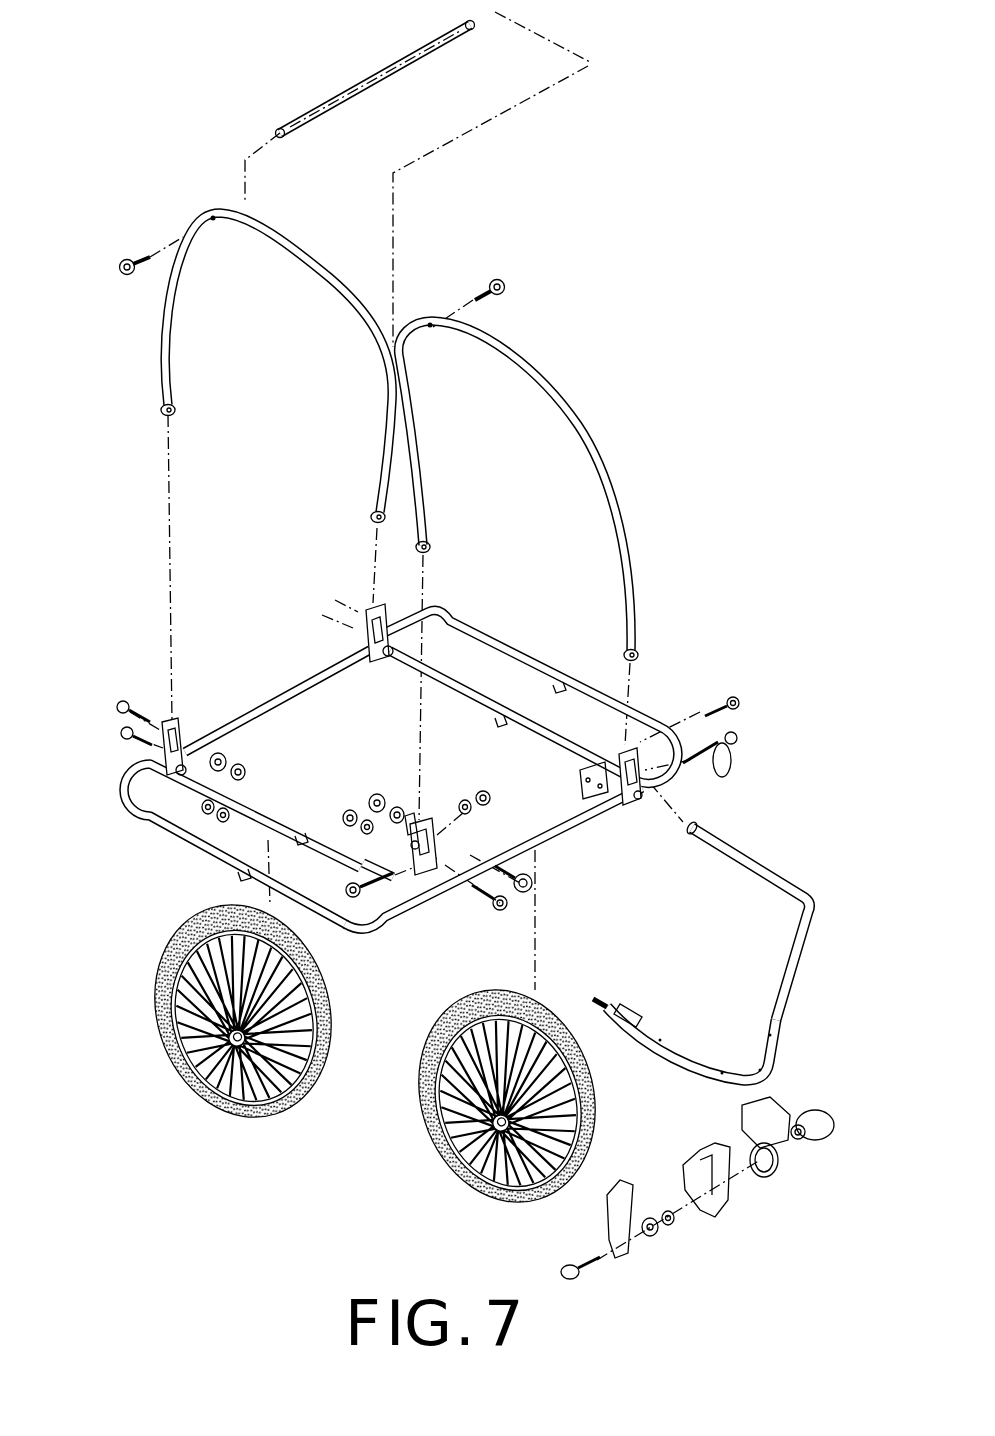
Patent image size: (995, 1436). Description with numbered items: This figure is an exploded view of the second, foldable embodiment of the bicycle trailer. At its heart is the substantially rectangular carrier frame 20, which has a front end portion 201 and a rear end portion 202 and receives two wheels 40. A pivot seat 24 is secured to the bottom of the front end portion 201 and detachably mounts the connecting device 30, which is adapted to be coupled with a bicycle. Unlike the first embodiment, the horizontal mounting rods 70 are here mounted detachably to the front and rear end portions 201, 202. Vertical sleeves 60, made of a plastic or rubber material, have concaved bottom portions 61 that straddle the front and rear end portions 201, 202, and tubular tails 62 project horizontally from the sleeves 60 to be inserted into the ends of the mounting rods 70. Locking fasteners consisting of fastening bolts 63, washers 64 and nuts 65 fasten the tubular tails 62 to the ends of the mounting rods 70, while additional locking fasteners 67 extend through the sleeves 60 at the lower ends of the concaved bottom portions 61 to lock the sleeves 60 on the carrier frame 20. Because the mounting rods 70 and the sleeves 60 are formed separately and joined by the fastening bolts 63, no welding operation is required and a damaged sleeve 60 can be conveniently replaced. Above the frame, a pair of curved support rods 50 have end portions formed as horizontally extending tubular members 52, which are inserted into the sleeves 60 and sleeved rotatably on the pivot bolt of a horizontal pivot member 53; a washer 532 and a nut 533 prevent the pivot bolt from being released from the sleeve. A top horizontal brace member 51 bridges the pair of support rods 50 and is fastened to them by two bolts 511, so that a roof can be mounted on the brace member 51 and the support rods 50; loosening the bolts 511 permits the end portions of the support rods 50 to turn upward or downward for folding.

The carrier frame 20 is at (401, 743).
The front end portion 201 is at (543, 833).
The rear end portion 202 is at (313, 675).
The pivot seat 24 is at (628, 802).
The connecting device 30 is at (816, 969).
The wheel 40 is at (255, 1123).
The curved support rod 50 is at (437, 427).
The top horizontal brace member 51 is at (327, 106).
The bolt 511 is at (125, 258).
The tubular member 52 is at (175, 400).
The horizontal pivot member 53 is at (525, 893).
The washer 532 is at (398, 805).
The nut 533 is at (365, 800).
The vertical sleeve 60 is at (353, 590).
The concaved bottom portion 61 is at (407, 880).
The tubular tail 62 is at (412, 815).
The fastening bolt 63 is at (148, 803).
The washer 64 is at (183, 727).
The nut 65 is at (182, 740).
The locking fastener 67 is at (500, 912).
The horizontal mounting rod 70 is at (257, 778).